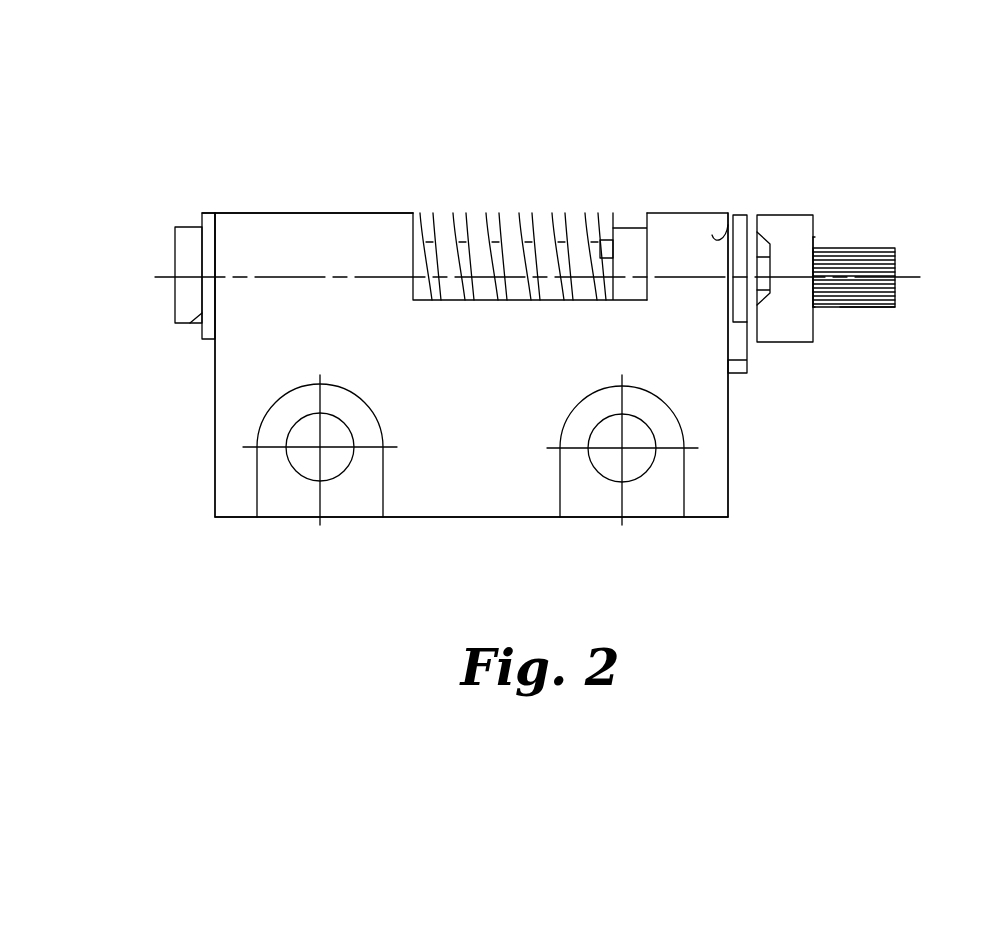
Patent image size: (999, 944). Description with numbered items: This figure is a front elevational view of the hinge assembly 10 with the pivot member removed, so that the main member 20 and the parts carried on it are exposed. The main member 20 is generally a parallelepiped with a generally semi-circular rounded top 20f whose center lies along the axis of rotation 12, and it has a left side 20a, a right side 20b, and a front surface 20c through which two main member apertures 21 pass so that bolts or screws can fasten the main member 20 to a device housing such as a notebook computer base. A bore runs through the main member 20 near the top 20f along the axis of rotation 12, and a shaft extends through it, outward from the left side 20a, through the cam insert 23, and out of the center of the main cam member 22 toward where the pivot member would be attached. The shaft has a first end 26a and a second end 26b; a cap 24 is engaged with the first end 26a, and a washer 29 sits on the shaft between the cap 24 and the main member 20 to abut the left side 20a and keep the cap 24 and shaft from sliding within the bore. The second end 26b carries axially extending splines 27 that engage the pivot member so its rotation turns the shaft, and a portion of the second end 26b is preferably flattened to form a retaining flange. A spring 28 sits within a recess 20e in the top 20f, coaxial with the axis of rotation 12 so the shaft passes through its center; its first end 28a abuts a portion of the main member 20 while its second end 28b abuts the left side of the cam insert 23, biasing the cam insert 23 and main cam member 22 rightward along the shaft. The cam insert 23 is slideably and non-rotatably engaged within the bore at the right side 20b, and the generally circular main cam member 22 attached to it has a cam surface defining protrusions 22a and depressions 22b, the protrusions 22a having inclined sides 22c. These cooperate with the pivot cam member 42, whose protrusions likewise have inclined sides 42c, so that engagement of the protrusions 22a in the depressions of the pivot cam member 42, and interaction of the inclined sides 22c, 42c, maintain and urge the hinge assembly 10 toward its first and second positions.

The hinge assembly 10 is at (722, 155).
The axis of rotation 12 is at (167, 277).
The main member 20 is at (280, 227).
The left side 20a is at (215, 417).
The right side 20b is at (727, 465).
The front surface 20c is at (483, 492).
The recess 20e is at (630, 228).
The top 20f is at (377, 225).
The main member apertures 21 is at (330, 460).
The main cam member 22 is at (740, 215).
The protrusion 22a is at (760, 302).
The depression 22b is at (750, 215).
The inclined sides 22c is at (728, 225).
The cam insert 23 is at (738, 340).
The cap 24 is at (190, 245).
The first end 26a is at (190, 323).
The second end 26b is at (877, 307).
The splines 27 is at (877, 248).
The spring 28 is at (453, 217).
The first end 28a is at (420, 217).
The second end 28b is at (615, 217).
The washer 29 is at (204, 214).
The pivot cam member 42 is at (800, 230).
The inclined sides 42c is at (815, 237).